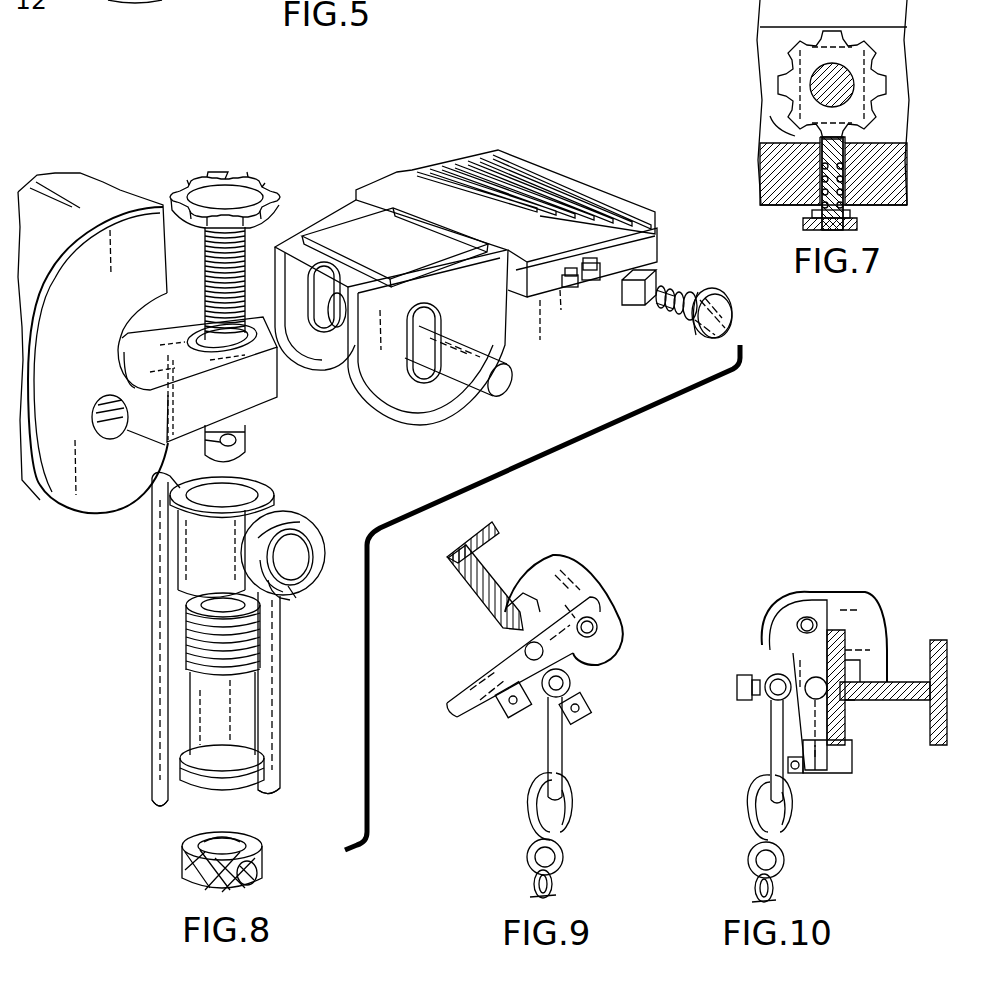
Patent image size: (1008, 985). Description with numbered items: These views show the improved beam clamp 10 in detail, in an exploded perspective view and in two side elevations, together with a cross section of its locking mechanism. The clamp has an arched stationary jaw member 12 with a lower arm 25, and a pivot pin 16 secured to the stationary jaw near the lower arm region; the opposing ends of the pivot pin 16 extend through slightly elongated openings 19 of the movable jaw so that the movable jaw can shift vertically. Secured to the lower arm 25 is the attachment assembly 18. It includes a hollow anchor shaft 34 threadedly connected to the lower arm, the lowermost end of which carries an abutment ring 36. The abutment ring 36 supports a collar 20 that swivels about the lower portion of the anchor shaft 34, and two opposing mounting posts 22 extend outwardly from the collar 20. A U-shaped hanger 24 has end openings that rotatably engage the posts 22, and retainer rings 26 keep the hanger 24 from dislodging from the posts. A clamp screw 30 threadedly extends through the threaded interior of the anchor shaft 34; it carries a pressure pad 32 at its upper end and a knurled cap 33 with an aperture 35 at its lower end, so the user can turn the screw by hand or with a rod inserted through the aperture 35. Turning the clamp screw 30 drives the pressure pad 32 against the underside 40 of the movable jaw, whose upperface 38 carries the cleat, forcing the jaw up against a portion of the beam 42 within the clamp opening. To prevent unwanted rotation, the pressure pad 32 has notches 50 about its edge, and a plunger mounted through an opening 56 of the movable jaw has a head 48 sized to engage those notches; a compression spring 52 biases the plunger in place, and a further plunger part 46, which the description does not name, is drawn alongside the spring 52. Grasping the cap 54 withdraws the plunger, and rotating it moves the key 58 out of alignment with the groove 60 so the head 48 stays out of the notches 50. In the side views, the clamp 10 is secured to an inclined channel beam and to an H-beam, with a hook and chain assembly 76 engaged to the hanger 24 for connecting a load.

In FIG. 9, the beam clamp 10 is at (596, 557).
In FIG. 10, the beam clamp 10 is at (868, 565).
In FIG. 8, the stationary jaw member 12 is at (42, 498).
In FIG. 8, the pivot pin 16 is at (500, 363).
In FIG. 8, the attachment assembly 18 is at (292, 490).
In FIG. 8, the openings 19 is at (333, 280).
In FIG. 8, the collar 20 is at (187, 545).
In FIG. 8, the mounting posts 22 is at (303, 555).
In FIG. 8, the U-shaped hanger 24 is at (183, 797).
In FIG. 9, the U-shaped hanger 24 is at (567, 745).
In FIG. 10, the U-shaped hanger 24 is at (777, 733).
In FIG. 8, the lower arm 25 is at (263, 375).
In FIG. 8, the retainer rings 26 is at (272, 592).
In FIG. 8, the clamp screw 30 is at (203, 273).
In FIG. 8, the pressure pad 32 is at (213, 187).
In FIG. 7, the pressure pad 32 is at (863, 60).
In FIG. 8, the knurled cap 33 is at (182, 862).
In FIG. 8, the anchor shaft 34 is at (236, 728).
In FIG. 8, the aperture 35 is at (256, 872).
In FIG. 8, the abutment ring 36 is at (185, 756).
In FIG. 8, the upperface 38 is at (537, 185).
In FIG. 8, the underside 40 is at (423, 242).
In FIG. 9, the beam 42 is at (500, 540).
In FIG. 10, the beam 42 is at (888, 700).
In FIG. 8, the spring 46 is at (685, 312).
In FIG. 7, the spring 46 is at (830, 177).
In FIG. 8, the plunger head 48 is at (643, 277).
In FIG. 7, the plunger head 48 is at (857, 147).
In FIG. 7, the notches 50 is at (790, 128).
In FIG. 8, the compression spring 52 is at (660, 305).
In FIG. 7, the compression spring 52 is at (805, 205).
In FIG. 8, the cap 54 is at (732, 318).
In FIG. 8, the opening 56 is at (587, 277).
In FIG. 7, the key 58 is at (860, 218).
In FIG. 8, the groove 60 is at (575, 276).
In FIG. 9, the hook and chain assembly 76 is at (503, 835).
In FIG. 10, the hook and chain assembly 76 is at (738, 840).